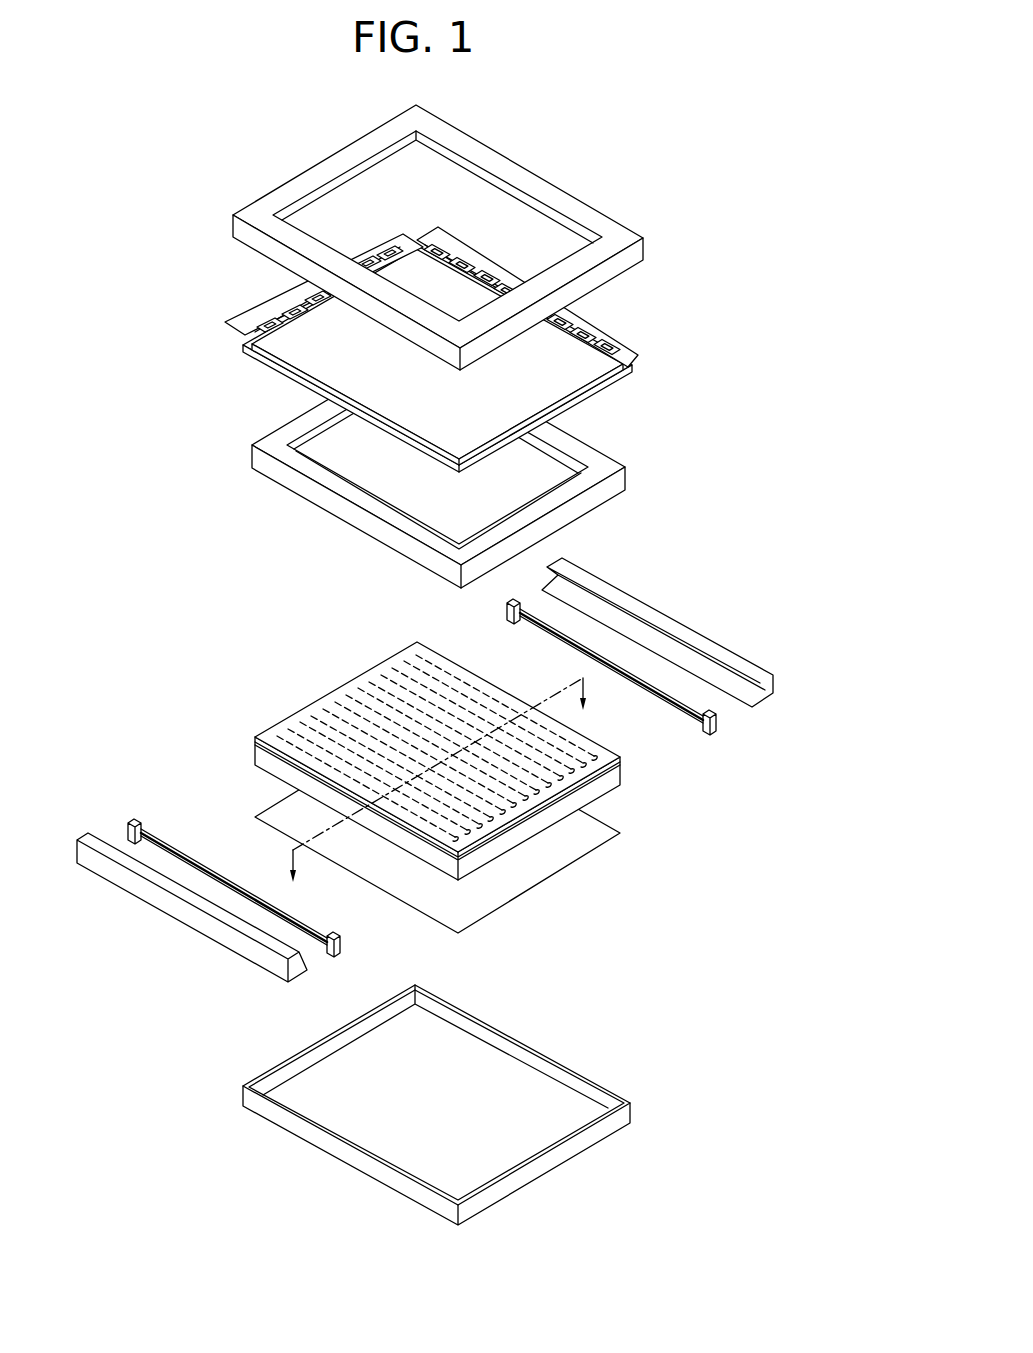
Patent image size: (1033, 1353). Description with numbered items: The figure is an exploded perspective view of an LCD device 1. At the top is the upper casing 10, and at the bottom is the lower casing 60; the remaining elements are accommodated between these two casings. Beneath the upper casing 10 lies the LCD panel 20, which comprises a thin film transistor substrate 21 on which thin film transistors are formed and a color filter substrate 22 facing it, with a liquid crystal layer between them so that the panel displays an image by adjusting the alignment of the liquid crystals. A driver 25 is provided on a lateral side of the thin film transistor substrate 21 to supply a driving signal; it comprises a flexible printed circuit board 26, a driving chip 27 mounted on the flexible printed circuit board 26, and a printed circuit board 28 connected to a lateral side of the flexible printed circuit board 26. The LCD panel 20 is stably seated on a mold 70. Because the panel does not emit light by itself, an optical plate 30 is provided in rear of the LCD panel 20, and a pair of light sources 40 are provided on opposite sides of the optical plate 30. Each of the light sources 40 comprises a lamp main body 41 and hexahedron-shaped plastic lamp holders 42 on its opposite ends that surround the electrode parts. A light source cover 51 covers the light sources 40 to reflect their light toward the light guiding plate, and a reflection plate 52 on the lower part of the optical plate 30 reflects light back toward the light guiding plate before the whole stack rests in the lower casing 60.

The LCD device 1 is at (145, 195).
The upper casing 10 is at (639, 250).
The LCD panel 20 is at (495, 358).
The thin film transistor substrate 21 is at (585, 393).
The color filter substrate 22 is at (595, 395).
The driver 25 is at (486, 297).
The flexible printed circuit board 26 is at (606, 338).
The driving chip 27 is at (701, 287).
The printed circuit board 28 is at (589, 320).
The optical plate 30 is at (633, 779).
The light sources 40 is at (229, 841).
The lamp main body 41 is at (165, 836).
The lamp holders 42 is at (133, 820).
The light source cover 51 is at (183, 915).
The reflection plate 52 is at (595, 840).
The lower casing 60 is at (620, 1117).
The mold 70 is at (622, 473).